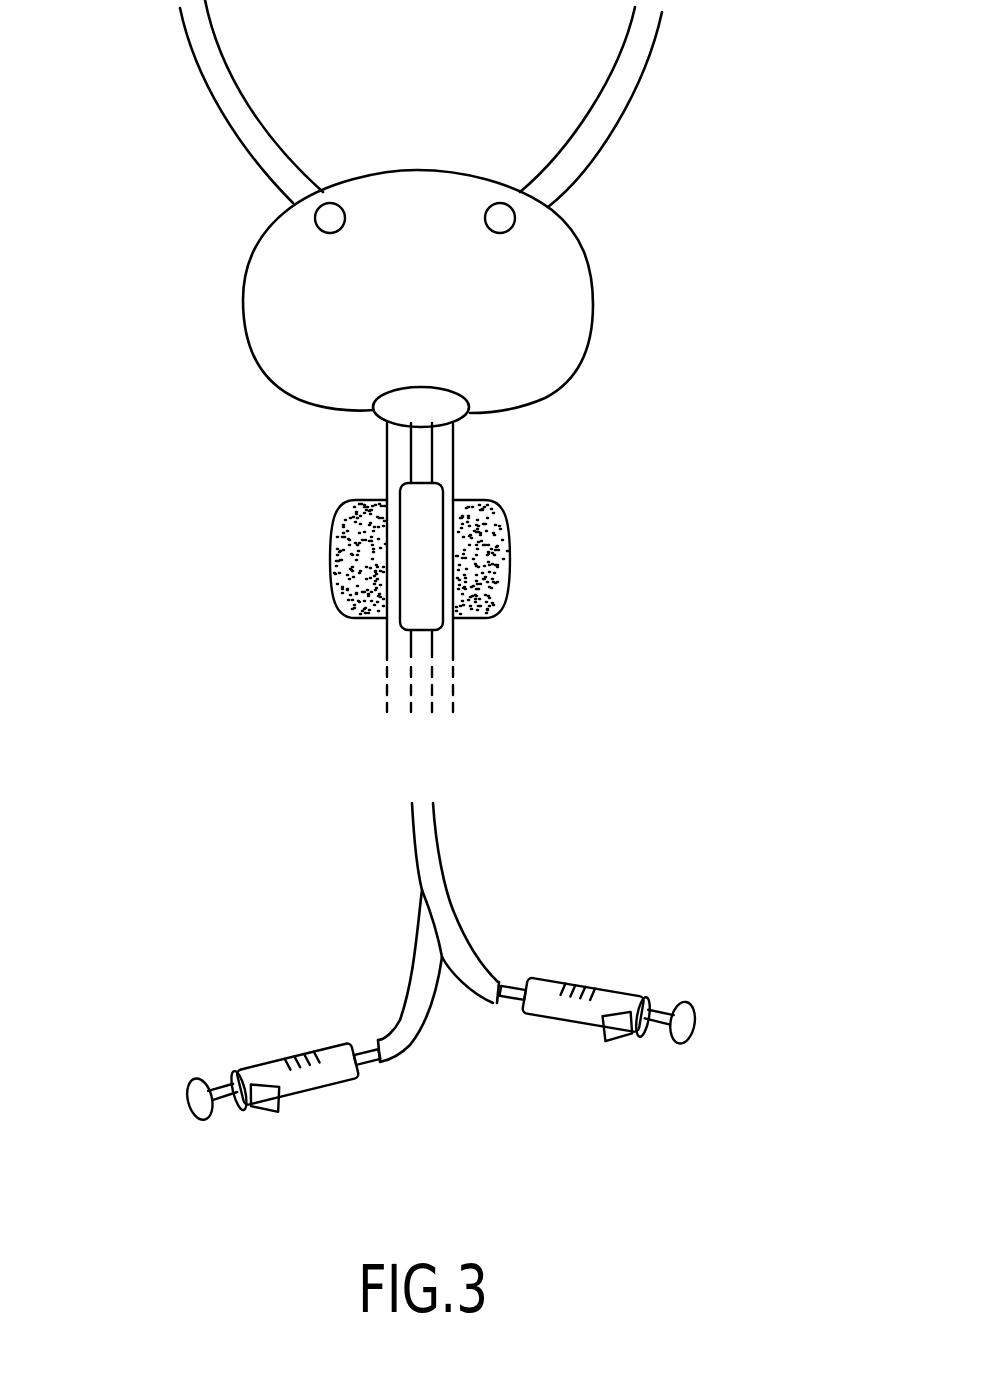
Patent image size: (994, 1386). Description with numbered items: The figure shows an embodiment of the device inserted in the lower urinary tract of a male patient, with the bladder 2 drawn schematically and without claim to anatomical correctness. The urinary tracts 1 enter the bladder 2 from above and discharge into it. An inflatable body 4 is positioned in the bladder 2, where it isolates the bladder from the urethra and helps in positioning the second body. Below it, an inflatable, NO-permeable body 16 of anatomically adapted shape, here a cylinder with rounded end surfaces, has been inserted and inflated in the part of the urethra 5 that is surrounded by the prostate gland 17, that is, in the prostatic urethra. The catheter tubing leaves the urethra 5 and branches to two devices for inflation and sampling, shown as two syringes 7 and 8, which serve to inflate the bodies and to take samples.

The urinary tracts 1 is at (640, 72).
The bladder 2 is at (552, 267).
The inflatable body 4 is at (400, 405).
The urethra 5 is at (453, 468).
The syringe 7 is at (598, 988).
The syringe 8 is at (297, 1048).
The inflatable body 16 is at (420, 605).
The prostate gland 17 is at (492, 567).